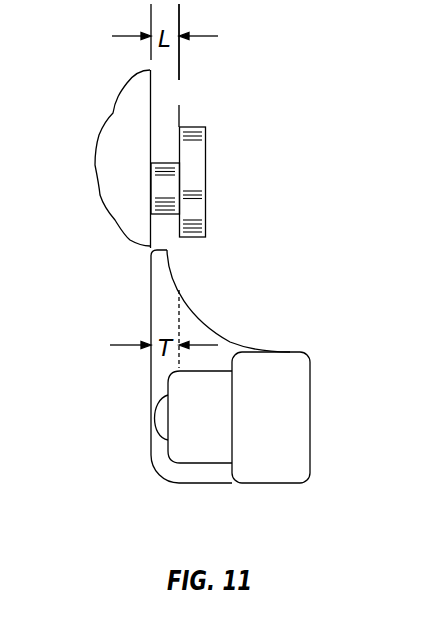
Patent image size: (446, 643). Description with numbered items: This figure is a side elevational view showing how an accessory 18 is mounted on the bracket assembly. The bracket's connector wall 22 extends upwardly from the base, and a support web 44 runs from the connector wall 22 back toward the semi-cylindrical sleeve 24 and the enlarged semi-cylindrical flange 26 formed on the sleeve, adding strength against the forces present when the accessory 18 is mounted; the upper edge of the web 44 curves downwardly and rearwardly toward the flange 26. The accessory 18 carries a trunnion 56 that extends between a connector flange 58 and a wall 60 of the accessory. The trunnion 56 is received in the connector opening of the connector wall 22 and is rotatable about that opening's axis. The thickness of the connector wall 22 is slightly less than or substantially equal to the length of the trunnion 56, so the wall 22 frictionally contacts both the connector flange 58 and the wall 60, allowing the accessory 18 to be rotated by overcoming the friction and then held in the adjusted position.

The accessory 18 is at (113, 113).
The wall 60 is at (152, 108).
The trunnion 56 is at (160, 188).
The connector flange 58 is at (206, 156).
The connector wall 22 is at (151, 318).
The support web 44 is at (202, 333).
The semi-cylindrical sleeve 24 is at (187, 452).
The semi-cylindrical flange 26 is at (303, 422).